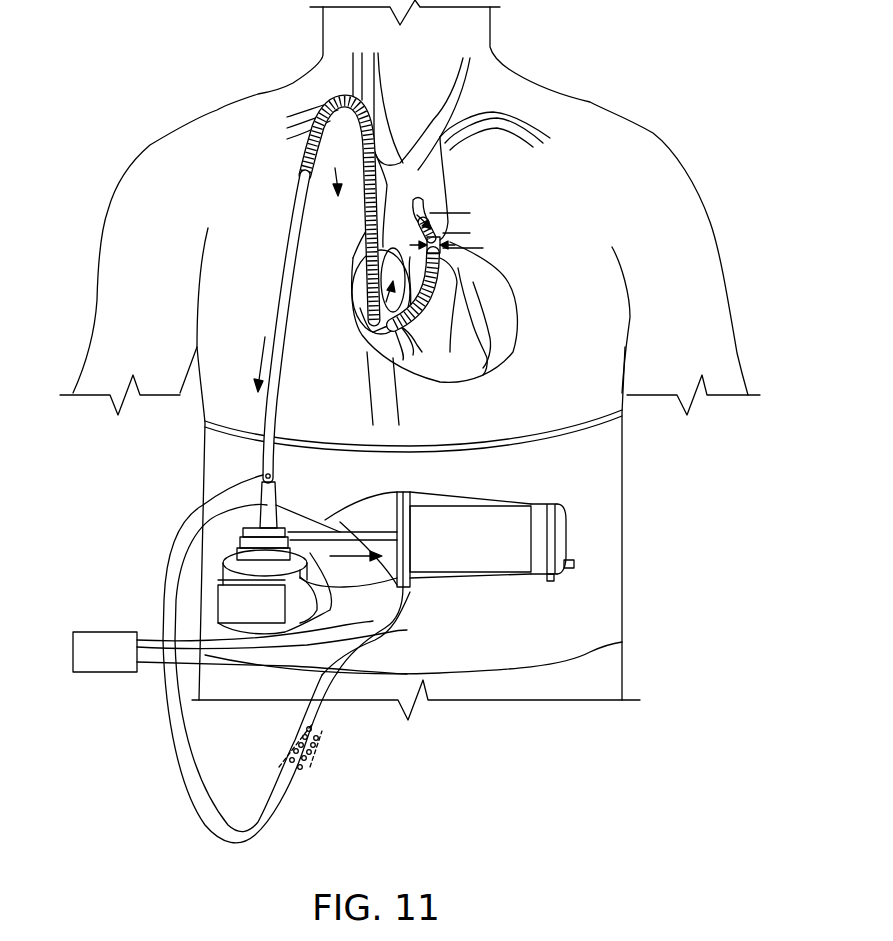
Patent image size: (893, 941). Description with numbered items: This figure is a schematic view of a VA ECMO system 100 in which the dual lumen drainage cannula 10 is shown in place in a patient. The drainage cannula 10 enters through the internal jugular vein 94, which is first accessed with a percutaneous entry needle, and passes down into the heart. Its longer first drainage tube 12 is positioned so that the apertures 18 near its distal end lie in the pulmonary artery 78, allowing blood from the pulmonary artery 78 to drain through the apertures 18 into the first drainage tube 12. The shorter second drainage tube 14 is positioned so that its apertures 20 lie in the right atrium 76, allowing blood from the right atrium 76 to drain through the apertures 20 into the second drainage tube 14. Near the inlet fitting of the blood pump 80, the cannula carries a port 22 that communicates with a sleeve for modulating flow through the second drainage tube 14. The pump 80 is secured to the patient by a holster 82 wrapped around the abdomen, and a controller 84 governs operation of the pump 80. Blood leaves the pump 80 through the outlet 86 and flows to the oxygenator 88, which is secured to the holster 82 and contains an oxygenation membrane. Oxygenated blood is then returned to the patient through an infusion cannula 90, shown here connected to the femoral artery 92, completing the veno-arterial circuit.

The drainage cannula 10 is at (344, 88).
The VA ECMO system 100 is at (618, 72).
The internal jugular vein 94 is at (360, 85).
The first drainage tube 12 is at (487, 308).
The second drainage tube 14 is at (363, 295).
The apertures 20 is at (367, 270).
The right atrium 76 is at (362, 332).
The pulmonary artery 78 is at (447, 213).
The apertures 18 is at (447, 233).
The port 22 is at (203, 486).
The blood pump 80 is at (220, 587).
The holster 82 is at (597, 453).
The controller 84 is at (103, 673).
The outlet 86 is at (323, 530).
The oxygenator 88 is at (502, 560).
The infusion cannula 90 is at (165, 563).
The femoral artery 92 is at (323, 721).